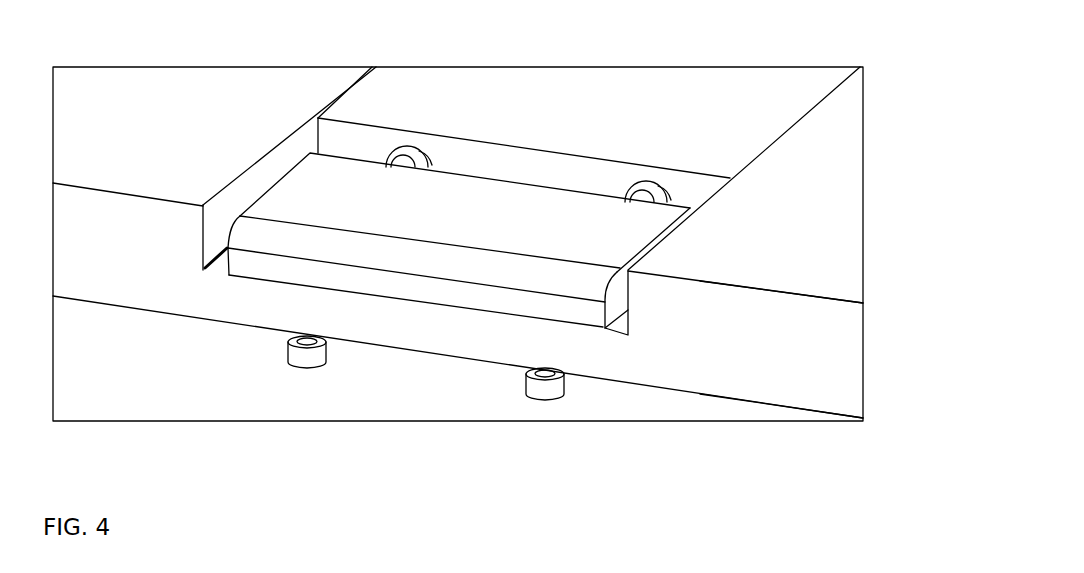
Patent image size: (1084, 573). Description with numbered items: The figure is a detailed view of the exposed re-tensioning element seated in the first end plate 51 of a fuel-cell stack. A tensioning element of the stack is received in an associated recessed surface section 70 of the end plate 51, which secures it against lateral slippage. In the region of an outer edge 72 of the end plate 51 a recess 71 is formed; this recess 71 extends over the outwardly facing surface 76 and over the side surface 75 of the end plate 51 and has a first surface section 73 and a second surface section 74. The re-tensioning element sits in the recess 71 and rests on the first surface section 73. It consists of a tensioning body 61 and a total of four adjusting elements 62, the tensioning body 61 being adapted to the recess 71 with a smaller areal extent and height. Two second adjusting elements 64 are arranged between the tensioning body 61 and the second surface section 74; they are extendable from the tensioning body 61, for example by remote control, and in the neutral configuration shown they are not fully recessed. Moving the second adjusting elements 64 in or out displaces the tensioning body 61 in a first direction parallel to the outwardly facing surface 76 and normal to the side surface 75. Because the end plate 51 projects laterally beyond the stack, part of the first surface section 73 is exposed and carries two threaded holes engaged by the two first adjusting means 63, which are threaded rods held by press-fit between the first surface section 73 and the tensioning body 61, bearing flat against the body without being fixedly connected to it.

The first end plate 51 is at (148, 102).
The tensioning body 61 is at (345, 182).
The adjusting elements 62 is at (514, 244).
The first adjusting means 63 is at (307, 358).
The second adjusting elements 64 is at (413, 146).
The recessed surface section 70 is at (766, 100).
The recess 71 is at (287, 142).
The outer edge 72 is at (829, 297).
The first surface section 73 is at (218, 262).
The second surface section 74 is at (528, 160).
The side surface 75 is at (823, 367).
The outwardly facing surface 76 is at (840, 160).